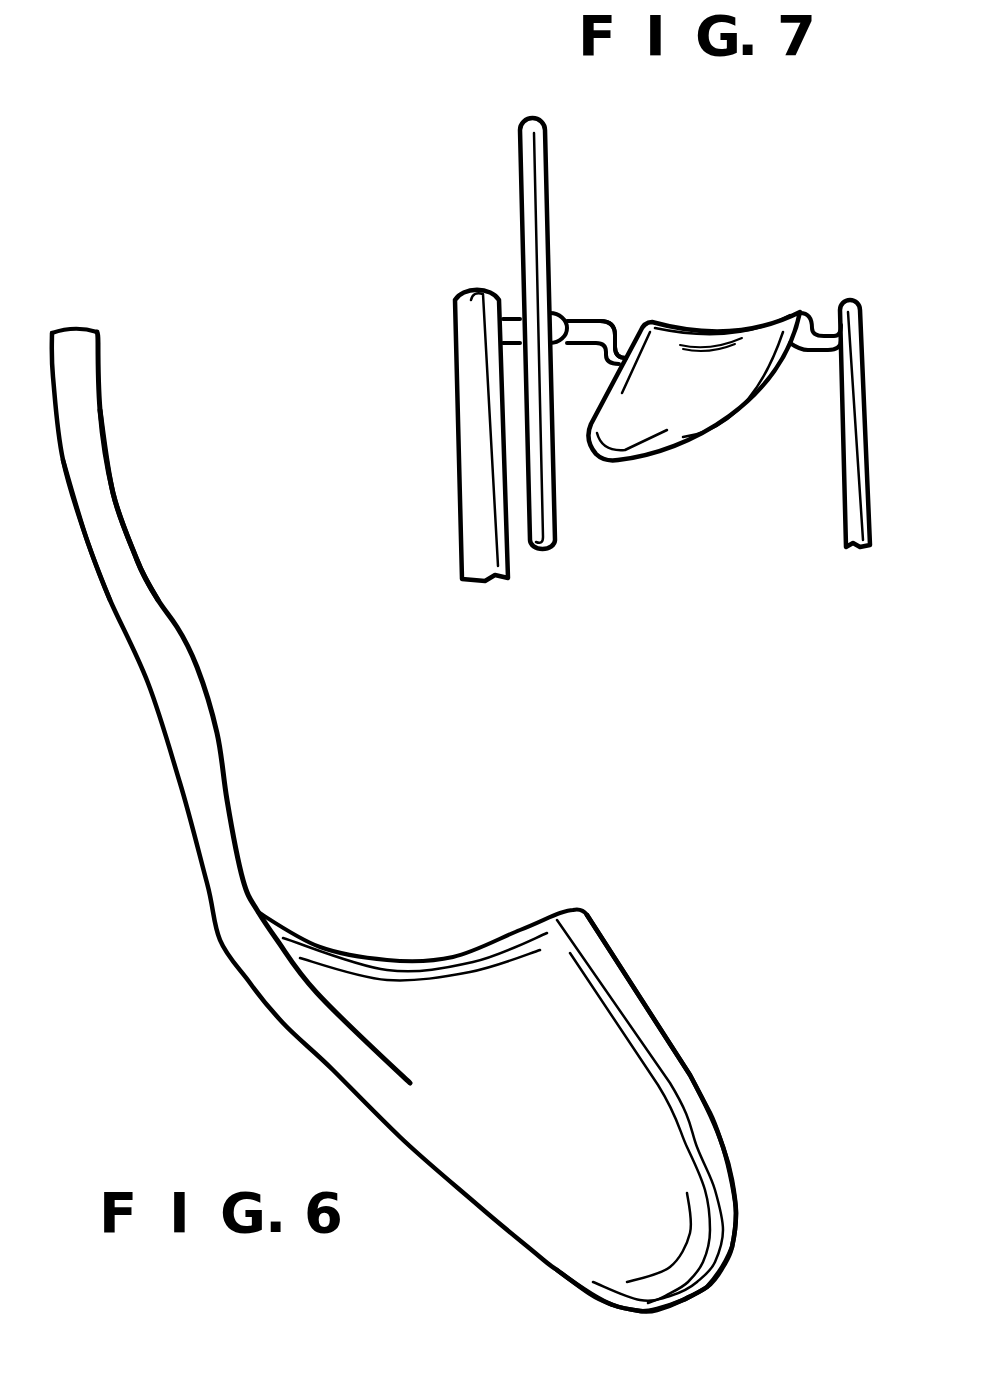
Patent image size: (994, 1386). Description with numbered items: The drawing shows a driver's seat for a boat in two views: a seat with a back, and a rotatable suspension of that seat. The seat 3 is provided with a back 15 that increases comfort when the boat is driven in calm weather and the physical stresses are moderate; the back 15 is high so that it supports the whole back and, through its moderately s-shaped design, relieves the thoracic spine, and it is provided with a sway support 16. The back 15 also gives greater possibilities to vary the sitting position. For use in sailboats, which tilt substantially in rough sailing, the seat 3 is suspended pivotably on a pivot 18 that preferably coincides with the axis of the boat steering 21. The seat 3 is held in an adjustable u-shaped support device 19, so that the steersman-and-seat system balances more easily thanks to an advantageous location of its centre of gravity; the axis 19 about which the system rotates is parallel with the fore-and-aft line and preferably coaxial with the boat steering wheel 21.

In FIG. 7, the seat 3 is at (680, 392).
In FIG. 6, the seat 3 is at (627, 1093).
In FIG. 6, the back 15 is at (158, 600).
In FIG. 6, the sway support 16 is at (200, 740).
In FIG. 7, the pivot 18 is at (563, 327).
In FIG. 7, the u-shaped support device 19 is at (620, 347).
In FIG. 7, the boat steering 21 is at (523, 222).